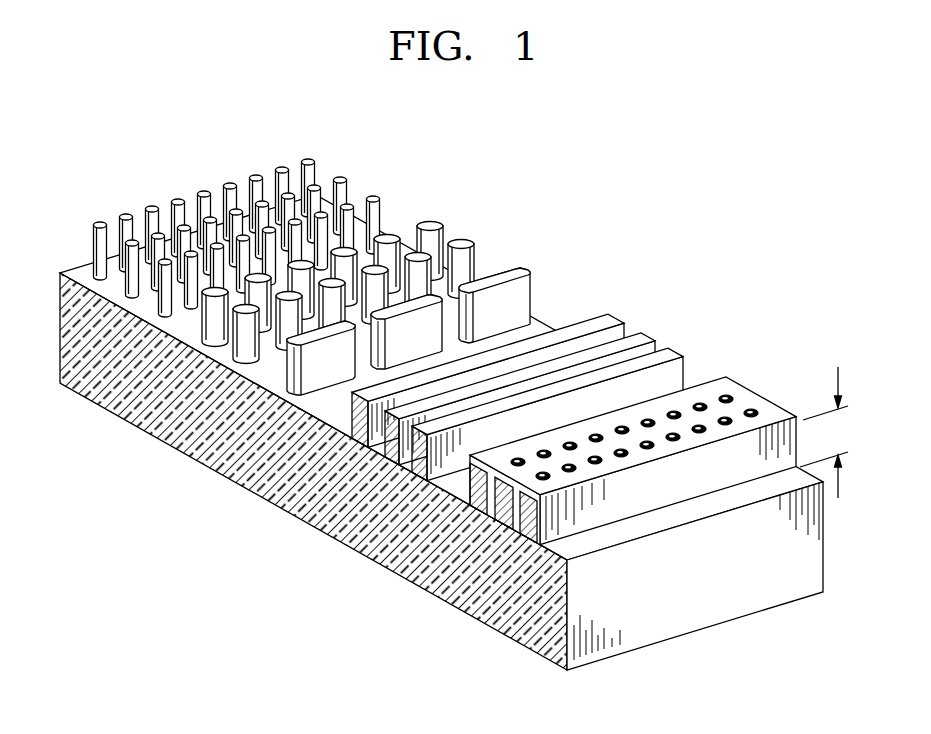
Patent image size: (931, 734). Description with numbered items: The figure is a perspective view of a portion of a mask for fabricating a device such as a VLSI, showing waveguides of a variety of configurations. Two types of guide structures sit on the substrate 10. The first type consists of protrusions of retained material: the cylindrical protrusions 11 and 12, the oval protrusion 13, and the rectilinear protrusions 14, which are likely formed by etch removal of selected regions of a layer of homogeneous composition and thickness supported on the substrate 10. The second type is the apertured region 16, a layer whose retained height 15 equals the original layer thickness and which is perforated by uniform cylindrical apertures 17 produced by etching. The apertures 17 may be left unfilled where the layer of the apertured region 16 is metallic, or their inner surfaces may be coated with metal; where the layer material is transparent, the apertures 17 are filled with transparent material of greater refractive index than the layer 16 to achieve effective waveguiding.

The substrate 10 is at (278, 486).
The cylindrical protrusion 11 is at (91, 232).
The cylindrical protrusion 12 is at (388, 232).
The oval protrusion 13 is at (523, 268).
The rectilinear protrusion 14 is at (614, 317).
The height 15 is at (826, 432).
The apertured region 16 is at (733, 382).
The apertures 17 is at (698, 403).